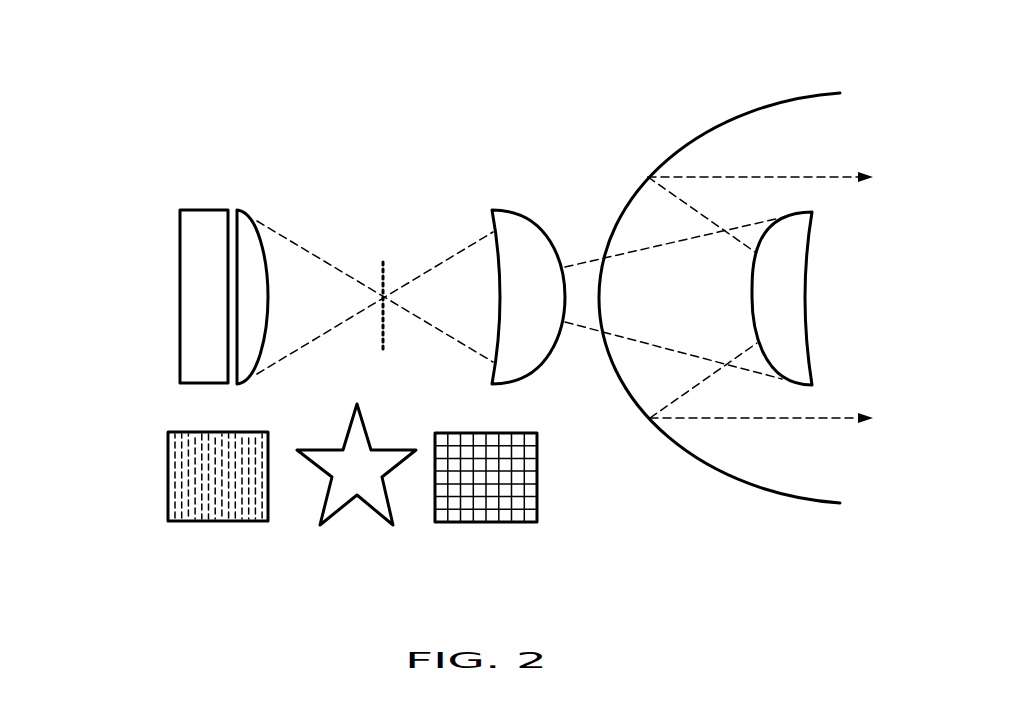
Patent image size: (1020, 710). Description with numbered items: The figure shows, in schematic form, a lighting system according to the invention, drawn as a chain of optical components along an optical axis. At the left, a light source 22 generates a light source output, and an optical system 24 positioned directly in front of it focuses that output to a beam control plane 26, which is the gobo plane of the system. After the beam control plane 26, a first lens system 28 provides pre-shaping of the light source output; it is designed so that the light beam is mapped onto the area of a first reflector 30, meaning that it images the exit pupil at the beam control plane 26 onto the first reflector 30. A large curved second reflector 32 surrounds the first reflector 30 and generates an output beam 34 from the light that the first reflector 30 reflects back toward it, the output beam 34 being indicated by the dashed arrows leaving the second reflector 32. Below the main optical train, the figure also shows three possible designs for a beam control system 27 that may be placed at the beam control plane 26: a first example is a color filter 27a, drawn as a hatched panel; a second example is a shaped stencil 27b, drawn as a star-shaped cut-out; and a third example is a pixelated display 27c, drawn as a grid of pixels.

The light source 22 is at (203, 210).
The optical system 24 is at (247, 210).
The beam control plane 26 is at (383, 260).
The beam control system 27 is at (138, 473).
The color filter 27a is at (212, 521).
The shaped stencil 27b is at (362, 505).
The pixelated display 27c is at (488, 522).
The first lens system 28 is at (508, 210).
The first reflector 30 is at (807, 297).
The second reflector 32 is at (737, 113).
The output beam 34 is at (835, 177).